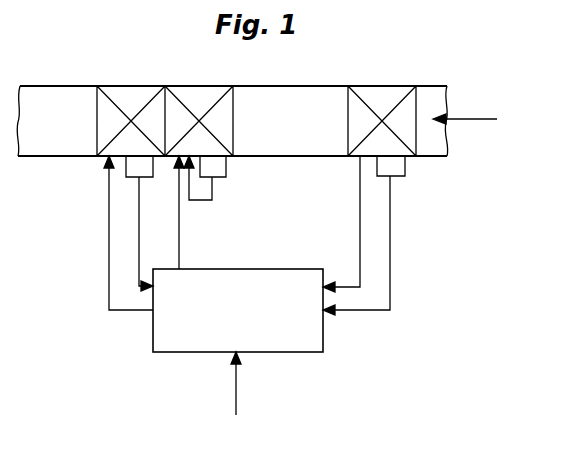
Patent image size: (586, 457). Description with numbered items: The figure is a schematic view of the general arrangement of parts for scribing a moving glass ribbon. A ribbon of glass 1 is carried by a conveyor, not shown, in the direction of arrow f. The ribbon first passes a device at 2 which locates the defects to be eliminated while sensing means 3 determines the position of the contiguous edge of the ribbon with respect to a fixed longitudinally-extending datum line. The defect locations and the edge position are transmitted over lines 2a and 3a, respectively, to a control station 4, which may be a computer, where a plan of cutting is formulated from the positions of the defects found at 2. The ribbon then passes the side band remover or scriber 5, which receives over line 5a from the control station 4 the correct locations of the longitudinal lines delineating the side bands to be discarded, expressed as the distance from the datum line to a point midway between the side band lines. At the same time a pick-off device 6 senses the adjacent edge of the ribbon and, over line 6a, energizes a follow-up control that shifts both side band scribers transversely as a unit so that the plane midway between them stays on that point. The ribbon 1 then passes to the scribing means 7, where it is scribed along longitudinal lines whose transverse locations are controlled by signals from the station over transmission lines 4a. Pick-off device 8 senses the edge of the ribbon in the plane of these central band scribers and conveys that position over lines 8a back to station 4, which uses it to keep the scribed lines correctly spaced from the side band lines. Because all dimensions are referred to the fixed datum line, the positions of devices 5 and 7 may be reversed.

The ribbon of glass 1 is at (437, 107).
The defect locating device 2 is at (388, 95).
The sensing means 3 is at (405, 170).
The control station 4 is at (290, 346).
The side band remover or scriber 5 is at (233, 97).
The pick-off device 6 is at (226, 170).
The scribing means 7 is at (130, 95).
The pick-off device 8 is at (143, 178).
The arrow indicating direction of movement f is at (471, 119).
The line 2a is at (352, 208).
The line 3a is at (392, 237).
The transmission lines 4a is at (108, 240).
The line 5a is at (181, 252).
The line 6a is at (213, 195).
The lines 8a is at (138, 256).